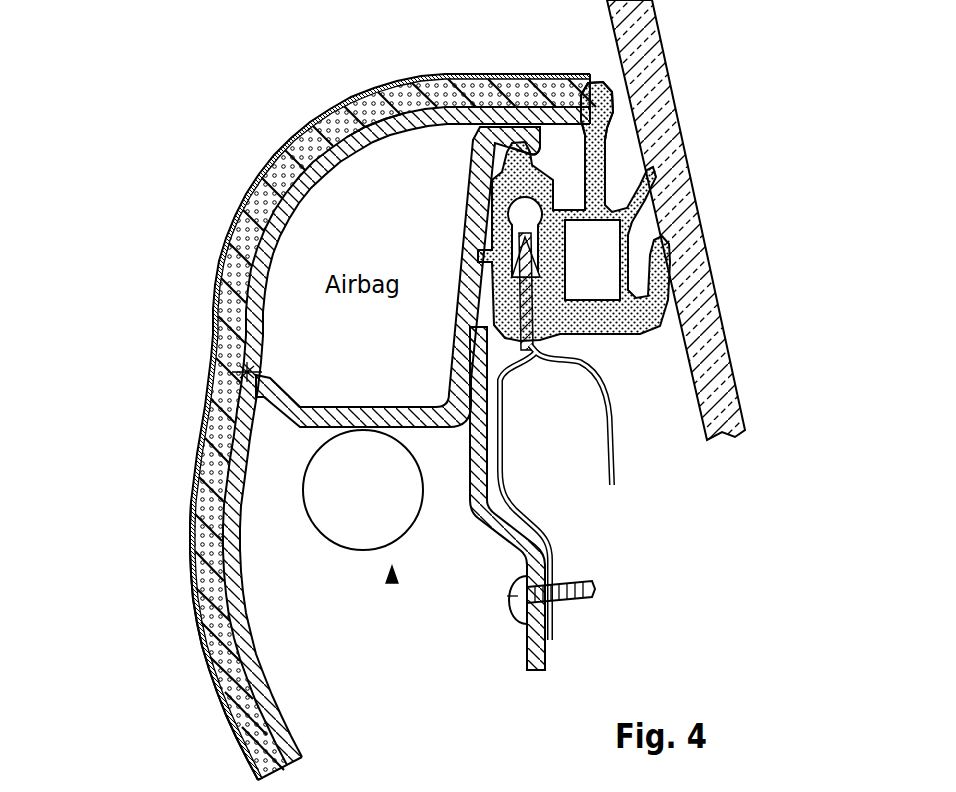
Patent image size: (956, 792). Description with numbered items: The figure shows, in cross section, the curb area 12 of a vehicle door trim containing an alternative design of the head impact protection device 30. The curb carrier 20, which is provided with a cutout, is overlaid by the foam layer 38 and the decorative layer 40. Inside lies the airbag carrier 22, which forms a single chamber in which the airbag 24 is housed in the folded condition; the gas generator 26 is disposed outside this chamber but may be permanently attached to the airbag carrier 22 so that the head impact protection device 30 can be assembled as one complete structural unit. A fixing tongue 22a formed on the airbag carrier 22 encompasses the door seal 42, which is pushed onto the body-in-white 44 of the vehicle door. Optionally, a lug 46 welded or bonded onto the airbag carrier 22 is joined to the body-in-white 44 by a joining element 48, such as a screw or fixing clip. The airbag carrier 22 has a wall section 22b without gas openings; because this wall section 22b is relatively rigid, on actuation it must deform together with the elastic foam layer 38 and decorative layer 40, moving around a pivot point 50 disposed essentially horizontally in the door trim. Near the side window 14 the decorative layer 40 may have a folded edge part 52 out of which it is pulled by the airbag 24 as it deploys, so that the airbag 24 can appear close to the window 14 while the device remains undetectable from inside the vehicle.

The curb area 12 is at (205, 237).
The side window 14 is at (648, 63).
The curb carrier 20 is at (536, 90).
The airbag carrier 22 is at (300, 430).
The fixing tongue 22a is at (540, 143).
The wall section 22b is at (372, 103).
The airbag 24 is at (285, 290).
The gas generator 26 is at (352, 543).
The head impact protection device 30 is at (392, 578).
The foam layer 38 is at (220, 700).
The decorative layer 40 is at (193, 650).
The door seal 42 is at (560, 212).
The body-in-white 44 is at (615, 470).
The lug 46 is at (495, 540).
The joining element 48 is at (515, 612).
The pivot point 50 is at (245, 372).
The folded edge part 52 is at (600, 100).